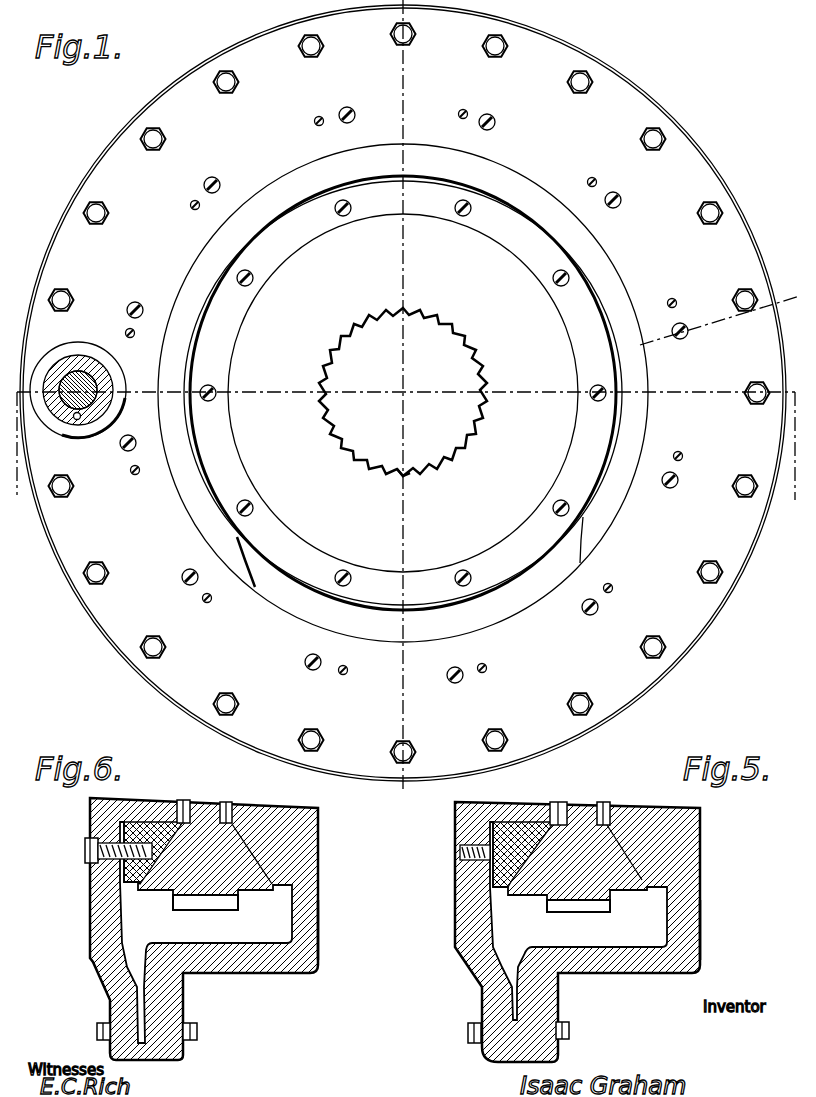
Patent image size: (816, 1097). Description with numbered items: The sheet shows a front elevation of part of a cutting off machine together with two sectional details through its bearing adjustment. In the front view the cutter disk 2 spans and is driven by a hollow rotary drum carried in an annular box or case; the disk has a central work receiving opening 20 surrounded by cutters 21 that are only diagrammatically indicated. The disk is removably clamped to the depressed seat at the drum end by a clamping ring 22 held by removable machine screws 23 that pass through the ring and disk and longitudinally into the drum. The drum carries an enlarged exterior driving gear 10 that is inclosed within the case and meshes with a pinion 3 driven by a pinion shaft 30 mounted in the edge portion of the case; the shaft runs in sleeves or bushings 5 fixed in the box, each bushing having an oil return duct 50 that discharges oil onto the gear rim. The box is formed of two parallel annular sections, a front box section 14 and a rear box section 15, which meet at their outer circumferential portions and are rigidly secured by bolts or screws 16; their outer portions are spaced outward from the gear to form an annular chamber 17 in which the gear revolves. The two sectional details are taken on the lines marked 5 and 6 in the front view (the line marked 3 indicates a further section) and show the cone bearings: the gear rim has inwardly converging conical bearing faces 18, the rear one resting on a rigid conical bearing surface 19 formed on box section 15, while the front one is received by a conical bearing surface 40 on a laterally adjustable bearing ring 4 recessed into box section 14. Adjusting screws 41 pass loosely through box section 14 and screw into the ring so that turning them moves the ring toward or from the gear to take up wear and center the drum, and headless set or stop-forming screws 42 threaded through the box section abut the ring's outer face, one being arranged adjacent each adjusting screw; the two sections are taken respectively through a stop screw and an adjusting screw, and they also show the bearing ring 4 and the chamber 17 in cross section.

In FIG. 1, the cutter disk 2 is at (362, 263).
In FIG. 1, the pinion 3 is at (403, 457).
In FIG. 1, the bearing ring 4 is at (402, 409).
In FIG. 6, the bearing ring 4 is at (135, 830).
In FIG. 5, the bearing ring 4 is at (518, 830).
In FIG. 1, the sleeves or bushings 5 is at (79, 366).
In FIG. 1, the section line 6- 6 is at (711, 325).
In FIG. 6, the driving gear 10 is at (197, 900).
In FIG. 5, the driving gear 10 is at (575, 905).
In FIG. 1, the box section 14 is at (628, 680).
In FIG. 6, the box section 14 is at (90, 925).
In FIG. 5, the box section 14 is at (458, 912).
In FIG. 6, the box section 15 is at (320, 945).
In FIG. 5, the box section 15 is at (702, 940).
In FIG. 1, the bolts or screws 16 is at (396, 746).
In FIG. 6, the bolts or screws 16 is at (198, 1030).
In FIG. 5, the bolts or screws 16 is at (466, 1032).
In FIG. 6, the annular chamber 17 is at (243, 932).
In FIG. 5, the annular chamber 17 is at (611, 936).
In FIG. 6, the bearing faces 18 is at (170, 812).
In FIG. 5, the bearing faces 18 is at (548, 822).
In FIG. 6, the bearing surface 19 is at (275, 902).
In FIG. 5, the bearing surface 19 is at (649, 906).
In FIG. 1, the work receiving opening 20 is at (403, 392).
In FIG. 1, the cutters 21 is at (401, 476).
In FIG. 1, the clamping ring 22 is at (345, 570).
In FIG. 1, the machine screws 23 is at (252, 503).
In FIG. 1, the pinion shaft 30 is at (99, 381).
In FIG. 6, the bearing surface 40 is at (143, 886).
In FIG. 5, the bearing surface 40 is at (527, 893).
In FIG. 1, the adjusting screws 41 is at (183, 574).
In FIG. 6, the adjusting screws 41 is at (84, 849).
In FIG. 1, the set or stop-forming screws 42 is at (207, 602).
In FIG. 5, the set or stop-forming screws 42 is at (459, 850).
In FIG. 1, the oil return duct 50 is at (78, 421).